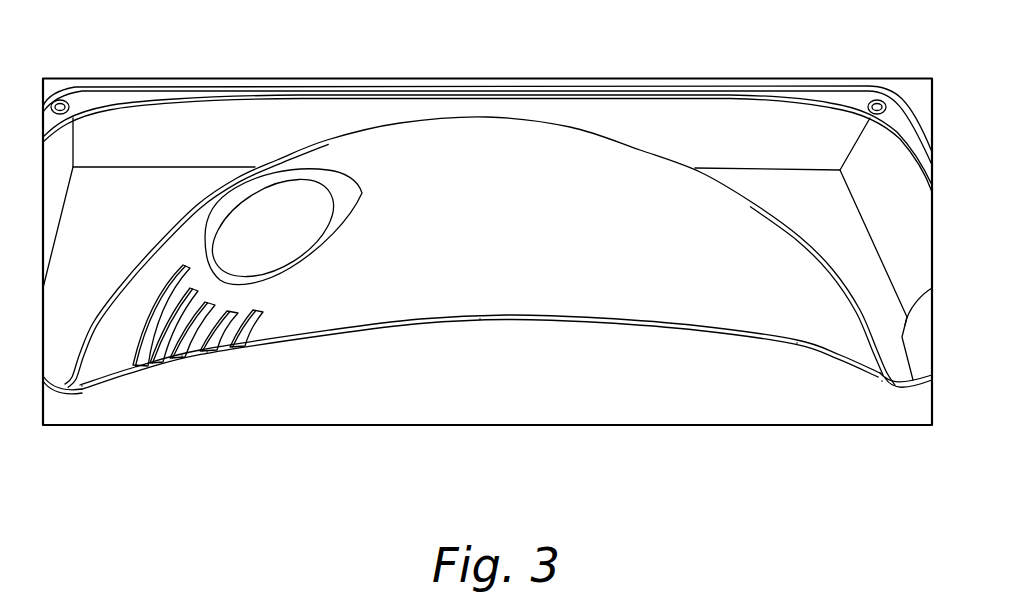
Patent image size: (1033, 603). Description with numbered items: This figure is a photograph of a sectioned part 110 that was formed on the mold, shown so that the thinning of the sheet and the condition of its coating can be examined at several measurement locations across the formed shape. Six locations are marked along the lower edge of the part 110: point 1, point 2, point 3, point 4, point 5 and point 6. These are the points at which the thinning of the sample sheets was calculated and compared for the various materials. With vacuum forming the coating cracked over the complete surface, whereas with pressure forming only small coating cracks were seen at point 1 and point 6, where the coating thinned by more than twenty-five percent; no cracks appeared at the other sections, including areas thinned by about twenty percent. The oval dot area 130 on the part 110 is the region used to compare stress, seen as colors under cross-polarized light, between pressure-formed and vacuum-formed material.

The part 110 is at (533, 157).
The dot area 130 is at (270, 218).
The point 1 is at (82, 385).
The point 2 is at (182, 355).
The point 3 is at (193, 339).
The point 4 is at (480, 318).
The point 5 is at (797, 342).
The point 6 is at (882, 380).